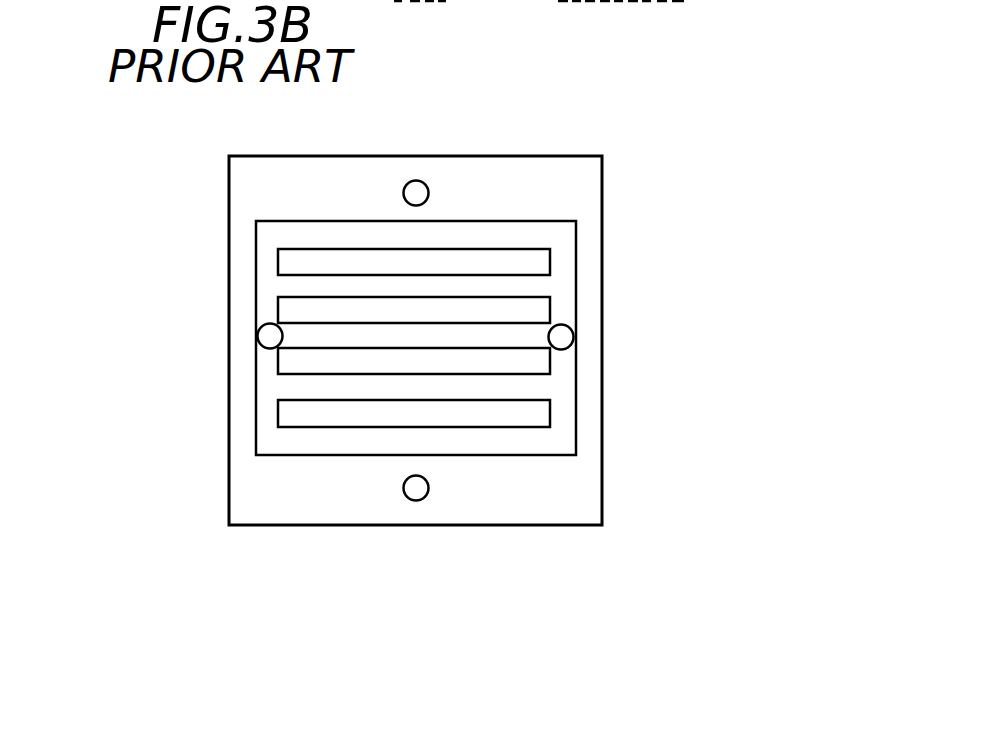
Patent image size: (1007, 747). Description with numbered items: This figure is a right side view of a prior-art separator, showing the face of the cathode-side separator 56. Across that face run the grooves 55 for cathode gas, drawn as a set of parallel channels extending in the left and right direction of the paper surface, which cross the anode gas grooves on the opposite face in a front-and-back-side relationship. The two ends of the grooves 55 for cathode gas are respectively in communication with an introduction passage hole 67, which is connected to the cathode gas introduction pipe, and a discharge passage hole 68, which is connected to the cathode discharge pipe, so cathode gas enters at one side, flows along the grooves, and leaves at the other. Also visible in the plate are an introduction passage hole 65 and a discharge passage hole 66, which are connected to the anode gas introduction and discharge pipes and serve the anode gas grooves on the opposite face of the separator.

The grooves for cathode gas 55 is at (268, 272).
The cathode-side separator 56 is at (541, 526).
The introduction passage hole 65 is at (418, 181).
The discharge passage hole 66 is at (407, 499).
The introduction passage hole 67 is at (260, 342).
The discharge passage hole 68 is at (573, 337).